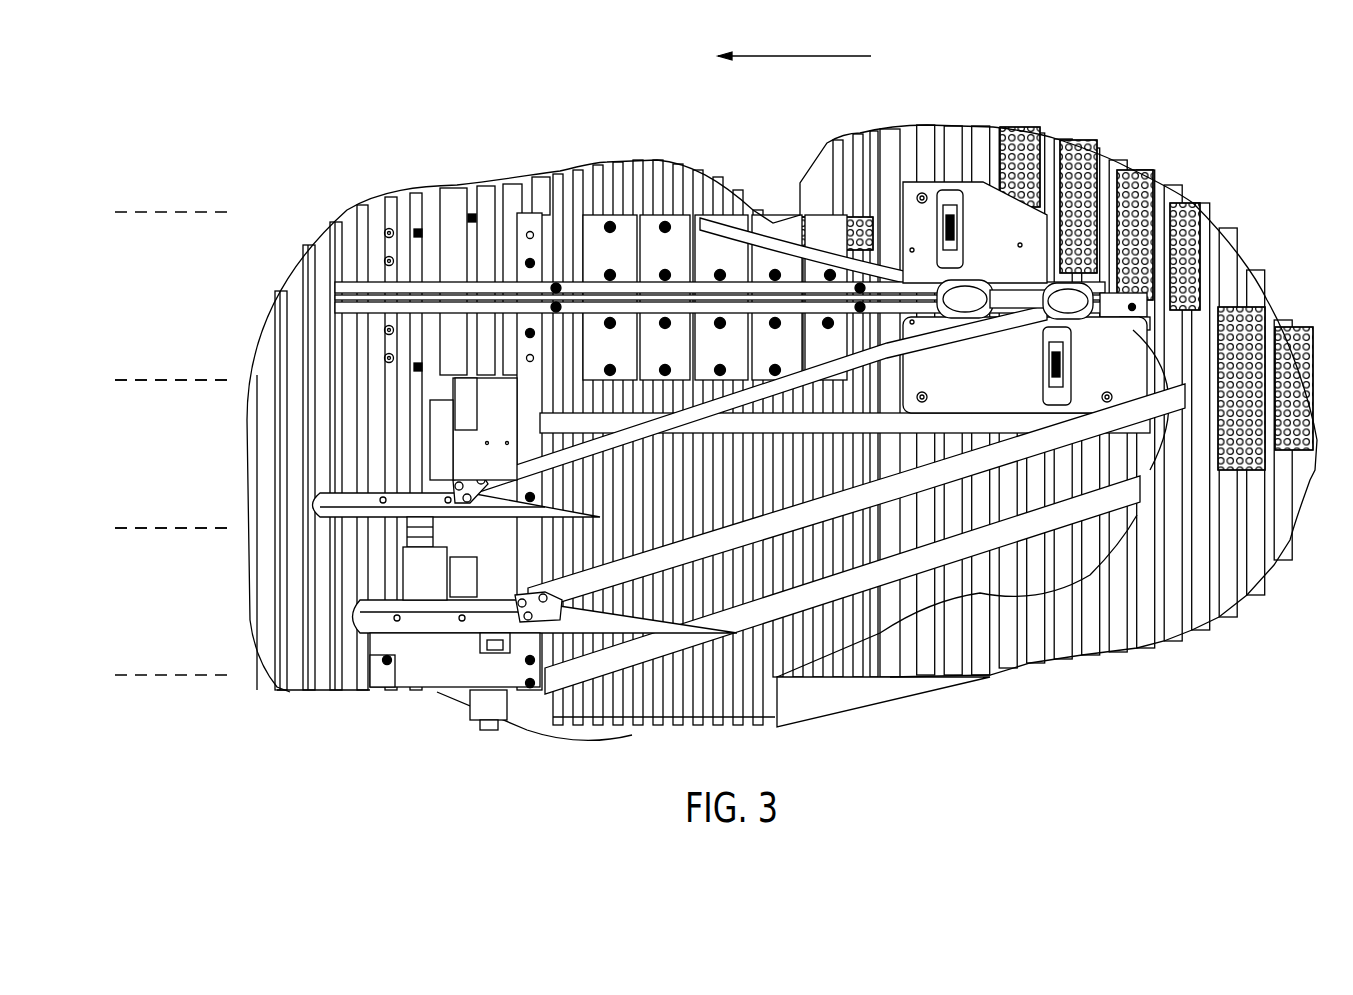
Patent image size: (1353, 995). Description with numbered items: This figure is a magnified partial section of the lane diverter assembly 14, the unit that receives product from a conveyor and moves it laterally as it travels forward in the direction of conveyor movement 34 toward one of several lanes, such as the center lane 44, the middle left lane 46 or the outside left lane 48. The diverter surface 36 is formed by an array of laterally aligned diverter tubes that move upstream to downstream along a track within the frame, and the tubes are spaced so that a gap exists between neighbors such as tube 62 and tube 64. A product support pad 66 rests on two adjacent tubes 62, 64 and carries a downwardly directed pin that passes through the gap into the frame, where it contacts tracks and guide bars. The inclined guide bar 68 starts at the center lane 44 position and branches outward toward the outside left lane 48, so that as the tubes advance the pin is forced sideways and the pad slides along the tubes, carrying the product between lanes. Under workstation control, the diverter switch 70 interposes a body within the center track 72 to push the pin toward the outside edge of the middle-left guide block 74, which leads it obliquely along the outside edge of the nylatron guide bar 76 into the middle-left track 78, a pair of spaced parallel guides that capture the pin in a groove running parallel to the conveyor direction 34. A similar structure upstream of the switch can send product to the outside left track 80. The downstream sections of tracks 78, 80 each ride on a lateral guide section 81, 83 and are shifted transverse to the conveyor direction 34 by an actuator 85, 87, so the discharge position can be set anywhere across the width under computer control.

The lane diverter assembly 14 is at (763, 436).
The direction of conveyor movement 34 is at (818, 55).
The diverter surface 36 is at (763, 464).
The center lane 44 is at (175, 296).
The middle left lane 46 is at (175, 454).
The outside left lane 48 is at (175, 601).
The diverter tube 62 is at (1255, 595).
The diverter tube 64 is at (1227, 617).
The product support pad 66 is at (1253, 310).
The guide bar 68 is at (953, 483).
The diverter switch 70 is at (1047, 315).
The center track 72 is at (1017, 300).
The middle-left guide block 74 is at (918, 337).
The nylatron guide bar 76 is at (612, 440).
The middle-left track 78 is at (463, 513).
The outside left track 80 is at (420, 628).
The lateral guide section 81 is at (423, 458).
The lateral guide section 83 is at (560, 635).
The actuator 85 is at (420, 572).
The actuator 87 is at (503, 698).